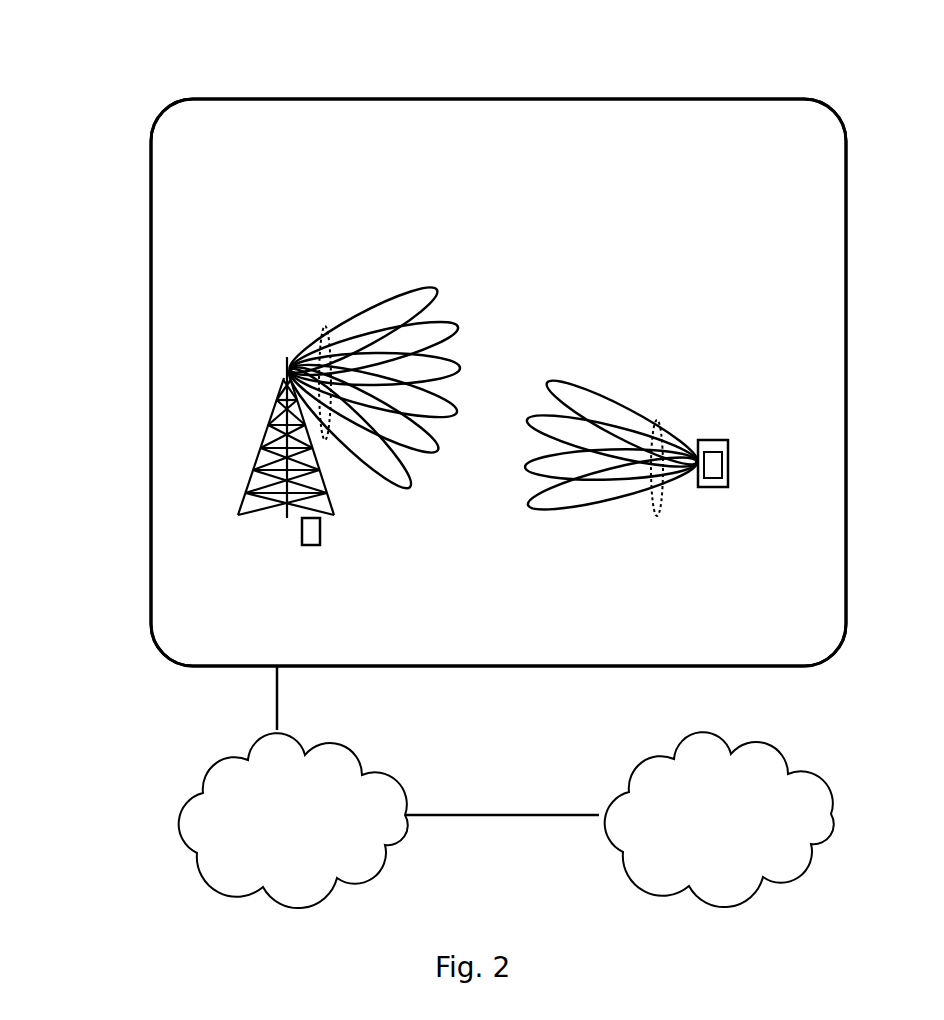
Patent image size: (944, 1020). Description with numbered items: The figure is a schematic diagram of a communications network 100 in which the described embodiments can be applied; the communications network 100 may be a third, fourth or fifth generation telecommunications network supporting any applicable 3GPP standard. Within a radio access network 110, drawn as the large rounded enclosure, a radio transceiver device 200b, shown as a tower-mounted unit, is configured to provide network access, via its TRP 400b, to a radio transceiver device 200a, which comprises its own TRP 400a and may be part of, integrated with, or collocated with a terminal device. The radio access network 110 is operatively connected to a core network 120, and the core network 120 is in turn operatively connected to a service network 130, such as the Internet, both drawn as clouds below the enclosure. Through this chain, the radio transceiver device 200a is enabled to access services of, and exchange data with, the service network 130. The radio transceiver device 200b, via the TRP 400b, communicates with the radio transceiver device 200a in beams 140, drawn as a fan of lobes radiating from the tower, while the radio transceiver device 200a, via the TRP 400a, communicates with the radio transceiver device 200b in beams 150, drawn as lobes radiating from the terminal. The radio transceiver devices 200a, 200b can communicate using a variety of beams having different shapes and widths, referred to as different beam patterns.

The communications network 100 is at (228, 67).
The radio access network 110 is at (151, 565).
The core network 120 is at (314, 835).
The service network 130 is at (741, 834).
The beams 140 is at (325, 326).
The beams 150 is at (657, 420).
The radio transceiver device 200a is at (712, 488).
The radio transceiver device 200b is at (302, 535).
The TRP 400a is at (729, 460).
The TRP 400b is at (287, 372).